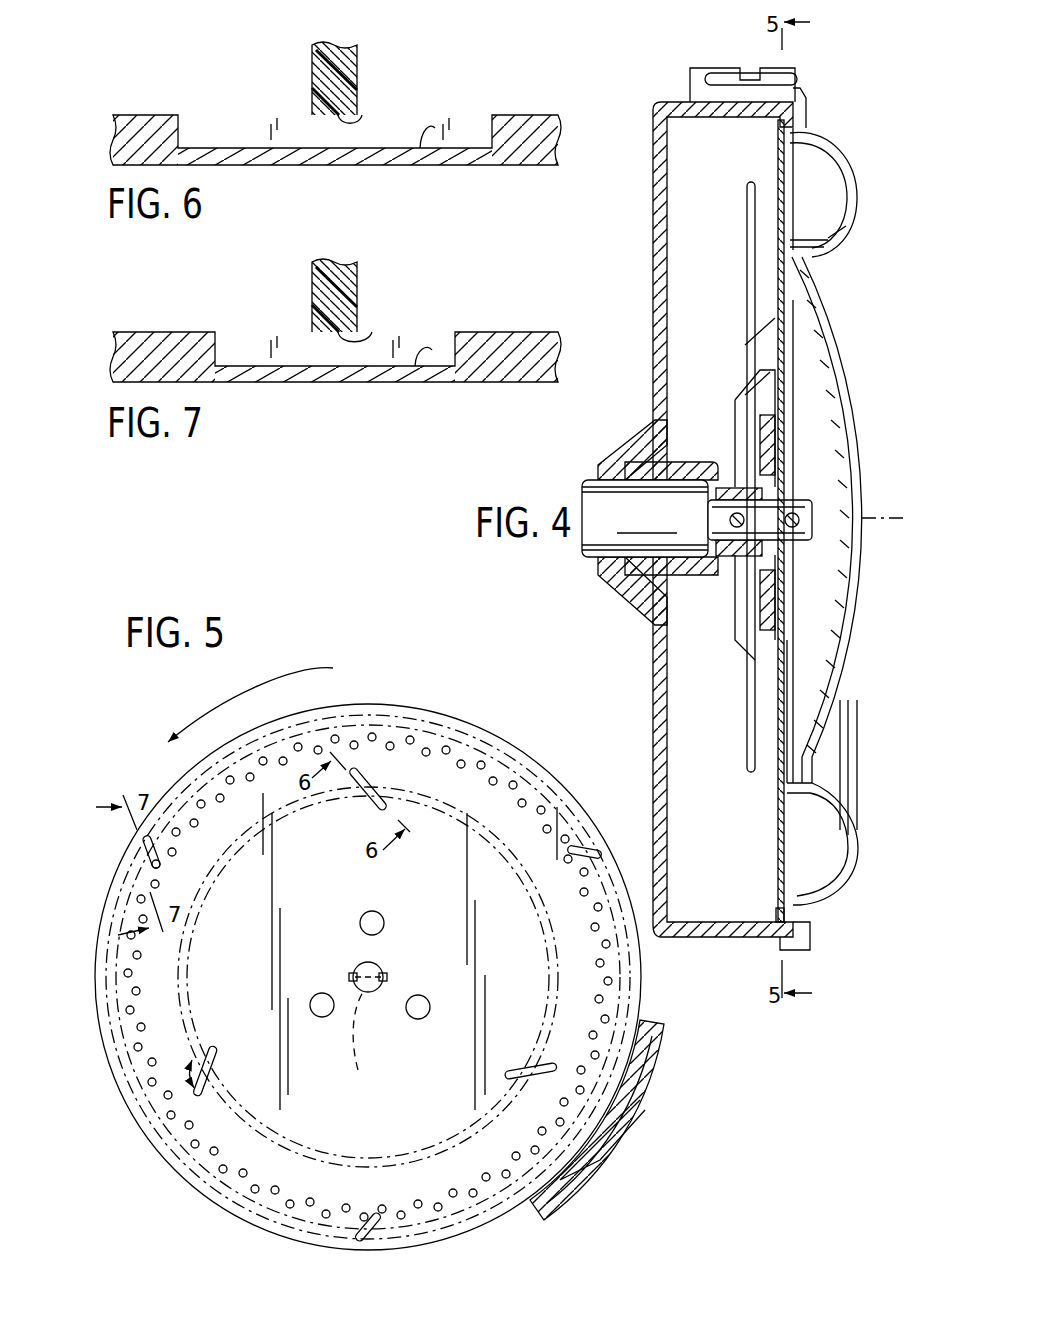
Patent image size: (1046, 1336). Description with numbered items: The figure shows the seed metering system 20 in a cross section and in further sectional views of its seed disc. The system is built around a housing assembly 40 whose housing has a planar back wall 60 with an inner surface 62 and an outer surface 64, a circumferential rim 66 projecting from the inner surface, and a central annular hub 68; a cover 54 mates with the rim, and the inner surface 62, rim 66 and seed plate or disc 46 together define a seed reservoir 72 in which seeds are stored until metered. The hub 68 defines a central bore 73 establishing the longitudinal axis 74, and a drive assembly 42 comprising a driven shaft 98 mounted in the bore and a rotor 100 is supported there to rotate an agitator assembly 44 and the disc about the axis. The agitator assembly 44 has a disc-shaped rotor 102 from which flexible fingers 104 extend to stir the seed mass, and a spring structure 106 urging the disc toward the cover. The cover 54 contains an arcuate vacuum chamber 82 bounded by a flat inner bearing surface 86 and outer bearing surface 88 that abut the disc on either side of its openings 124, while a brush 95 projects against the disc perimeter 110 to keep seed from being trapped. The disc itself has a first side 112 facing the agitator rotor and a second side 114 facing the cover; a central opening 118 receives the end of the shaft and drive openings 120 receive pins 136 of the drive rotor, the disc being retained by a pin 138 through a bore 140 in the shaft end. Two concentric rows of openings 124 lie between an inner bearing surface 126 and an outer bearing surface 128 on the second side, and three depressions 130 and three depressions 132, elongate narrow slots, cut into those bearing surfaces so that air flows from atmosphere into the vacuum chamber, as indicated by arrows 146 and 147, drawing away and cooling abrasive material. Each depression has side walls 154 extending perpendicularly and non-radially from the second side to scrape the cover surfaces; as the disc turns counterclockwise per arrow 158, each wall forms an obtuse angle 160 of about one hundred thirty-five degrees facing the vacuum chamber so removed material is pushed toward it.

In FIG. 4, the seed metering system 20 is at (870, 48).
In FIG. 5, the seed metering system 20 is at (92, 735).
In FIG. 4, the housing assembly 40 is at (658, 100).
In FIG. 4, the drive assembly 42 is at (585, 542).
In FIG. 5, the drive assembly 42 is at (388, 968).
In FIG. 4, the agitator assembly 44 is at (742, 368).
In FIG. 6, the seed plate or disc 46 is at (520, 165).
In FIG. 7, the seed plate or disc 46 is at (518, 331).
In FIG. 4, the seed plate or disc 46 is at (785, 848).
In FIG. 5, the seed plate or disc 46 is at (345, 703).
In FIG. 6, the cover 54 is at (312, 82).
In FIG. 7, the cover 54 is at (312, 277).
In FIG. 4, the cover 54 is at (848, 366).
In FIG. 4, the back wall 60 is at (650, 160).
In FIG. 4, the inner surface 62 is at (667, 192).
In FIG. 4, the outer surface 64 is at (656, 196).
In FIG. 4, the circumferential skirt or rim 66 is at (697, 113).
In FIG. 4, the annular hub 68 is at (648, 440).
In FIG. 4, the seed reservoir or chamber 72 is at (710, 922).
In FIG. 4, the central bore 73 is at (625, 580).
In FIG. 4, the longitudinal axis 74 is at (888, 514).
In FIG. 4, the vacuum chamber 82 is at (840, 175).
In FIG. 6, the inner bearing surface 86 is at (358, 120).
In FIG. 4, the inner bearing surface 86 is at (830, 236).
In FIG. 5, the inner bearing surface 86 is at (514, 852).
In FIG. 7, the outer bearing surface 88 is at (373, 332).
In FIG. 4, the outer bearing surface 88 is at (788, 142).
In FIG. 5, the outer bearing surface 88 is at (566, 800).
In FIG. 4, the brush 95 is at (776, 912).
In FIG. 4, the driven shaft 98 is at (590, 478).
In FIG. 5, the driven shaft 98 is at (365, 993).
In FIG. 4, the rotor 100 is at (725, 558).
In FIG. 4, the disc-shaped rotor 102 is at (766, 432).
In FIG. 4, the flexible fingers 104 is at (747, 222).
In FIG. 4, the spring structure 106 is at (778, 425).
In FIG. 5, the perimeter 110 is at (170, 788).
In FIG. 6, the first side 112 is at (238, 165).
In FIG. 7, the first side 112 is at (220, 383).
In FIG. 6, the second side 114 is at (128, 112).
In FIG. 7, the second side 114 is at (148, 330).
In FIG. 5, the second side 114 is at (248, 981).
In FIG. 5, the central opening 118 is at (386, 972).
In FIG. 5, the drive sockets or openings 120 is at (366, 920).
In FIG. 4, the openings 124 is at (805, 172).
In FIG. 5, the openings 124 is at (390, 741).
In FIG. 6, the inner bearing surface 126 is at (512, 111).
In FIG. 4, the inner bearing surface 126 is at (786, 252).
In FIG. 5, the inner bearing surface 126 is at (482, 855).
In FIG. 7, the outer bearing surface 128 is at (483, 331).
In FIG. 4, the outer bearing surface 128 is at (800, 140).
In FIG. 5, the outer bearing surface 128 is at (480, 740).
In FIG. 6, the depressions 130 is at (435, 128).
In FIG. 5, the depressions 130 is at (360, 787).
In FIG. 7, the depressions 132 is at (432, 350).
In FIG. 5, the depressions 132 is at (600, 846).
In FIG. 5, the pins 136 is at (372, 923).
In FIG. 4, the pin 138 is at (808, 536).
In FIG. 5, the pin 138 is at (357, 970).
In FIG. 4, the bore 140 is at (808, 503).
In FIG. 5, the bore 140 is at (359, 1044).
In FIG. 6, the arrows 146 is at (270, 127).
In FIG. 7, the arrows 147 is at (268, 343).
In FIG. 6, the side walls 154 is at (468, 125).
In FIG. 7, the side walls 154 is at (297, 345).
In FIG. 5, the side walls 154 is at (368, 797).
In FIG. 5, the arrow 158 is at (287, 668).
In FIG. 5, the obtuse angle 160 is at (190, 1068).